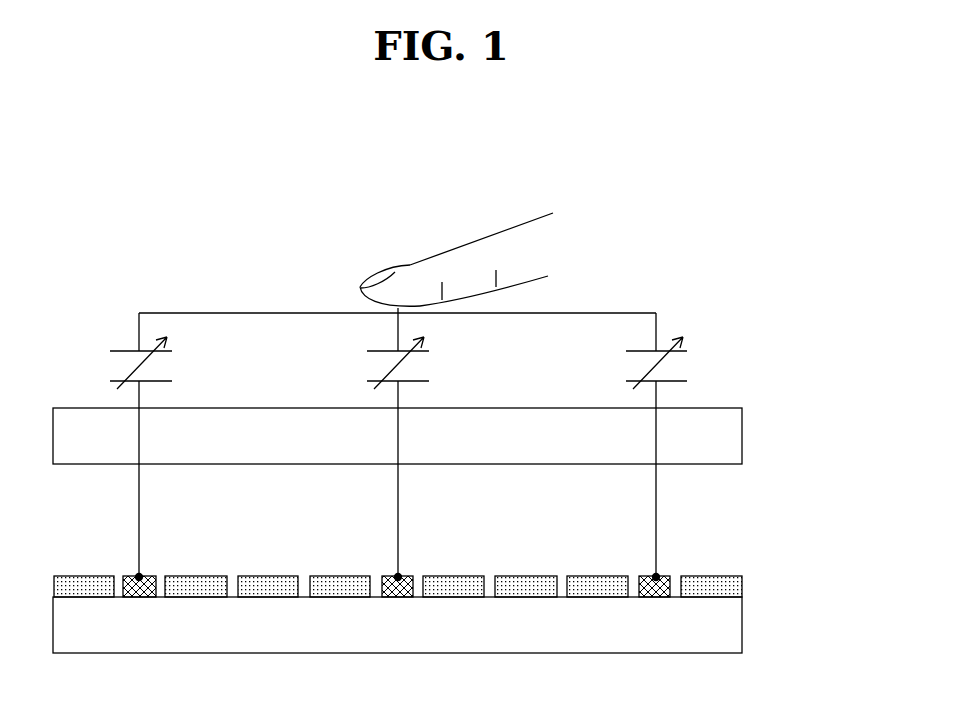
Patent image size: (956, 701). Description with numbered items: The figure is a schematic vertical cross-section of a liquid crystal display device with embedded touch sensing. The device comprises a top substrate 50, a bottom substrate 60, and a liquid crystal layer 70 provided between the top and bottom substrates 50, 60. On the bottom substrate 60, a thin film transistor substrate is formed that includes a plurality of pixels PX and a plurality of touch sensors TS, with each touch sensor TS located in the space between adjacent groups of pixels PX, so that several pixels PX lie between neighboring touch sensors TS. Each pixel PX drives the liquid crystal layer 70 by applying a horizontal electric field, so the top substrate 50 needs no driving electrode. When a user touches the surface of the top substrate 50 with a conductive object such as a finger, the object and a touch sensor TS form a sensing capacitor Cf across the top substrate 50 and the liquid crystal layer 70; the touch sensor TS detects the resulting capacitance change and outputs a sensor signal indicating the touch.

The top substrate 50 is at (729, 441).
The bottom substrate 60 is at (729, 631).
The liquid crystal layer 70 is at (717, 505).
The pixel PX is at (440, 574).
The touch sensor TS is at (662, 574).
The sensing capacitor Cf is at (412, 445).